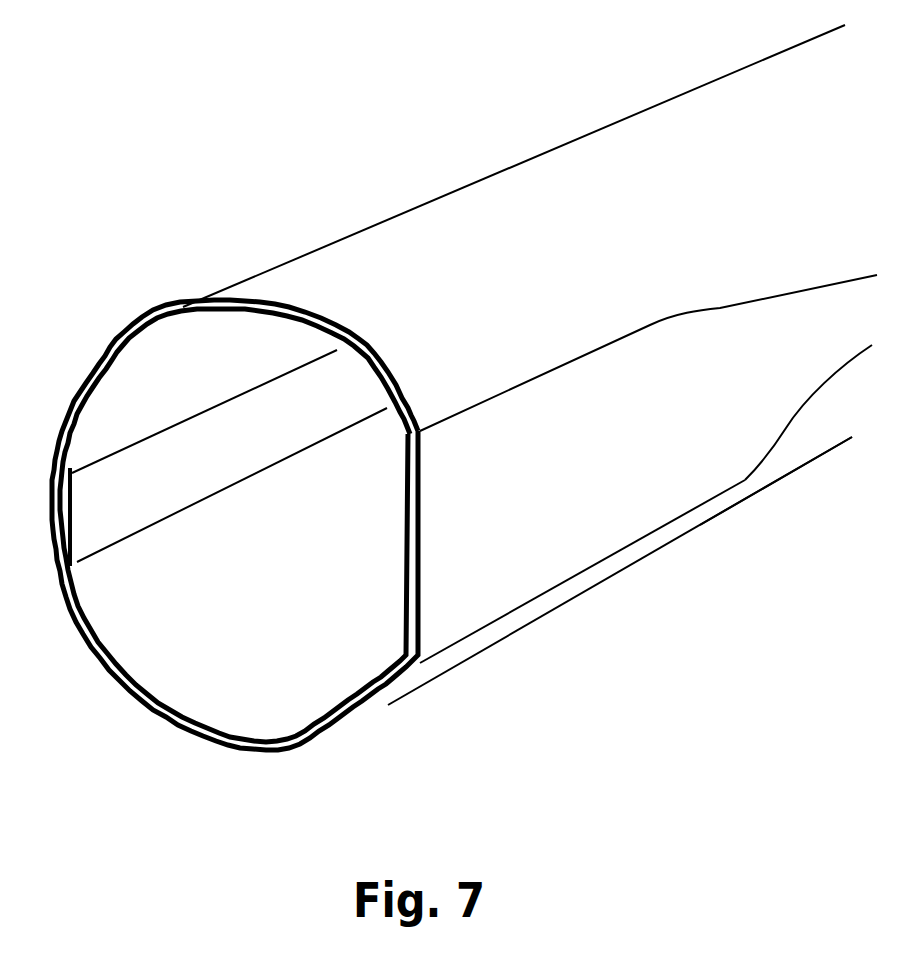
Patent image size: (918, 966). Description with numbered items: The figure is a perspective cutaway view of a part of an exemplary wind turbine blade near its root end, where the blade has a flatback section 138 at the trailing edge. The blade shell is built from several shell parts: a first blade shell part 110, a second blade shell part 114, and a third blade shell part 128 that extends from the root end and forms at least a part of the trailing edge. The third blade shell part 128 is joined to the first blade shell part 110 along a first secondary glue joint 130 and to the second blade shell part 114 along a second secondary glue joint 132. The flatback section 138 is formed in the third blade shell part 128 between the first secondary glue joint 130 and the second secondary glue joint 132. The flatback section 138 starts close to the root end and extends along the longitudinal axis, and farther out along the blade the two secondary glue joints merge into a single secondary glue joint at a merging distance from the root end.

The first blade shell part 110 is at (460, 657).
The second blade shell part 114 is at (337, 252).
The third blade shell part 128 is at (493, 513).
The first secondary glue joint 130 is at (798, 423).
The second secondary glue joint 132 is at (575, 353).
The flatback section 138 is at (605, 433).